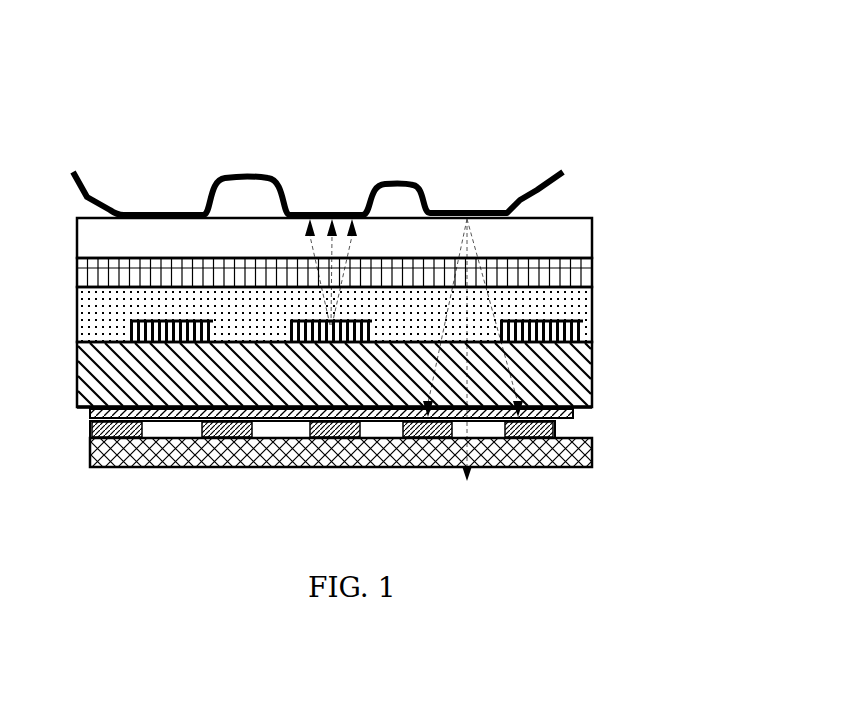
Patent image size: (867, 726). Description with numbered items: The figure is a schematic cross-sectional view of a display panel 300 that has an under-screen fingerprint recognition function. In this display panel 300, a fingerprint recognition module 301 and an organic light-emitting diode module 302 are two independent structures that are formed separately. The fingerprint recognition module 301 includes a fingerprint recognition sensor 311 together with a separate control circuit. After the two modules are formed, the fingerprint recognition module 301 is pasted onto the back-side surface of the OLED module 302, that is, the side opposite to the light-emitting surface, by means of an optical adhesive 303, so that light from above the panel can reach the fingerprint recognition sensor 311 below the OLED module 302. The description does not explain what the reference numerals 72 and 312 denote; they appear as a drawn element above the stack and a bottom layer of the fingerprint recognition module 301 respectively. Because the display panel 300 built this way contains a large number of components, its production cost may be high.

The display panel 300 is at (583, 60).
The cover layer 72 is at (592, 303).
The organic light-emitting diode (OLED) module 302 is at (72, 260).
The optical adhesive 303 is at (592, 400).
The fingerprint recognition module 301 is at (85, 423).
The fingerprint recognition sensor 311 is at (557, 425).
The base substrate 312 is at (592, 452).